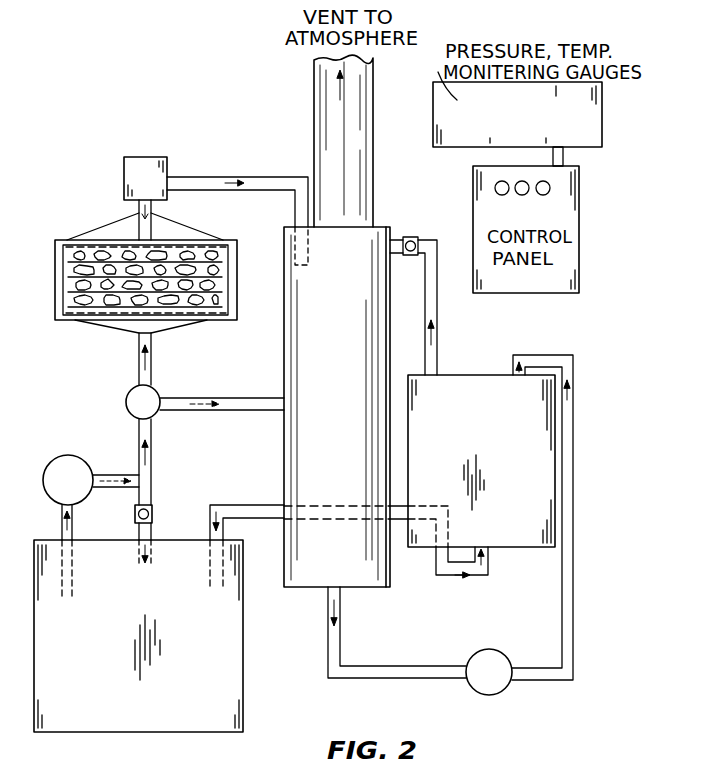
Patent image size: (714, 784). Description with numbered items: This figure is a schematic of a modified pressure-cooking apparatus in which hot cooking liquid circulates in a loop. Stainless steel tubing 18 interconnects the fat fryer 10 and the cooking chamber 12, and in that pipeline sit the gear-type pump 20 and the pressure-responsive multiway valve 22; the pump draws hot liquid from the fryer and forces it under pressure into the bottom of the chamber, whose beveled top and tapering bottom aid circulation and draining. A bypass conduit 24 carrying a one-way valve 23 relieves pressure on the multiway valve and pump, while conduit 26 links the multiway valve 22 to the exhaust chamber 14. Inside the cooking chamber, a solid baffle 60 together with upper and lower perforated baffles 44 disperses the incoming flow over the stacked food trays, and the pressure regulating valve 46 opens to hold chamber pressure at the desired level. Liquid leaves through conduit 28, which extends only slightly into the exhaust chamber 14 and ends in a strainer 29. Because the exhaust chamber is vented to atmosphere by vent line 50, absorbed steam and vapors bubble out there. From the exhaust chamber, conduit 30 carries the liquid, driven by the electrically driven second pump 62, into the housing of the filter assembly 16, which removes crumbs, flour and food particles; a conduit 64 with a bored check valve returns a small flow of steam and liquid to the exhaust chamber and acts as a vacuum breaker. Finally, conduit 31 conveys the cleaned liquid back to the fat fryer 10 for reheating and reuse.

The fat fryer 10 is at (100, 651).
The cooking chamber 12 is at (221, 324).
The exhaust chamber 14 is at (348, 349).
The filter assembly 16 is at (490, 441).
The tubing 18 is at (149, 375).
The pump 20 is at (80, 495).
The multiway valve 22 is at (127, 405).
The one-way valve 23 is at (149, 508).
The conduit 24 is at (152, 533).
The conduit 26 is at (255, 408).
The conduit 28 is at (227, 178).
The strainer 29 is at (307, 244).
The conduit 30 is at (370, 668).
The conduit 31 is at (256, 507).
The perforated baffles 44 is at (207, 248).
The pressure regulating valve 46 is at (142, 163).
The vent line 50 is at (357, 146).
The solid baffle 60 is at (128, 328).
The second pump 62 is at (480, 655).
The conduit 64 is at (438, 348).